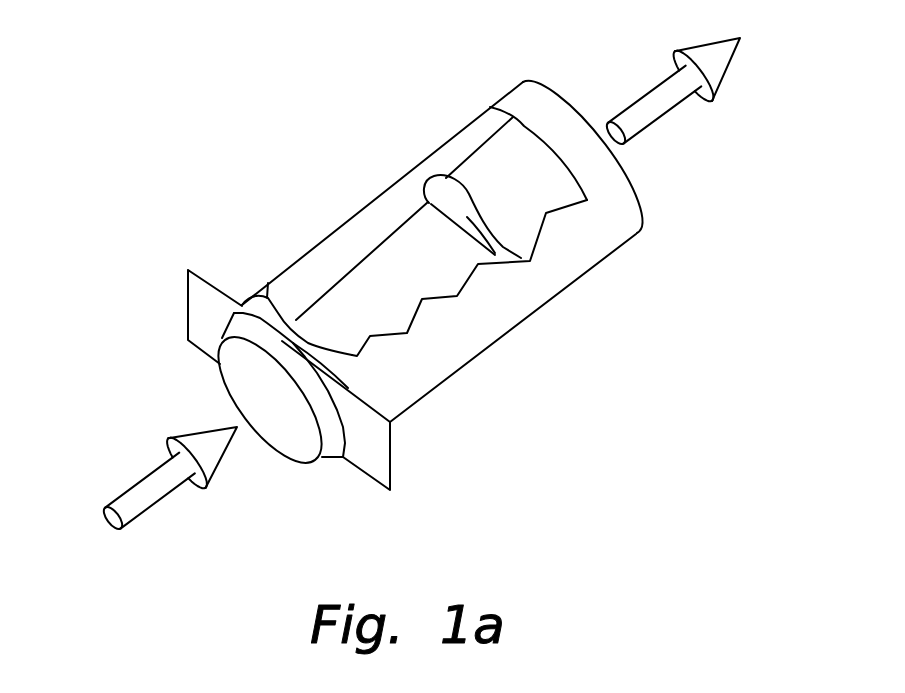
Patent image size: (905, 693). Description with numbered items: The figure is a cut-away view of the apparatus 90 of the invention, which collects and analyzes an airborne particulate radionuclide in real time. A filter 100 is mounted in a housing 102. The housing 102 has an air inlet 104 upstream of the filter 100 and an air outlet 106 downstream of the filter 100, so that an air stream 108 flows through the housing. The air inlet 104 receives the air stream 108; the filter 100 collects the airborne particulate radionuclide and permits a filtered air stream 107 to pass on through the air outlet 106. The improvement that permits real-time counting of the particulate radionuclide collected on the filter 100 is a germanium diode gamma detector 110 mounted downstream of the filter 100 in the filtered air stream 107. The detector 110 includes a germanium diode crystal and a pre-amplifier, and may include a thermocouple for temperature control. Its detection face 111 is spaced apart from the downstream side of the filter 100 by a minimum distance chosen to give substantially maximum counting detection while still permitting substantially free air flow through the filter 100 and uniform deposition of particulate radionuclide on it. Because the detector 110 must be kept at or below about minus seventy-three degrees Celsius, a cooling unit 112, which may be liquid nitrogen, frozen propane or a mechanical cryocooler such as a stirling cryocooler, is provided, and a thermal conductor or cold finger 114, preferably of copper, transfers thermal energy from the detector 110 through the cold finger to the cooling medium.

The apparatus 90 is at (205, 84).
The filter 100 is at (207, 284).
The housing 102 is at (528, 363).
The air inlet 104 is at (222, 382).
The air outlet 106 is at (505, 92).
The filtered air stream 107 is at (660, 117).
The air stream 108 is at (138, 485).
The germanium diode gamma detector 110 is at (377, 242).
The detection face 111 is at (286, 306).
The cooling unit 112 is at (478, 147).
The cold finger 114 is at (477, 217).